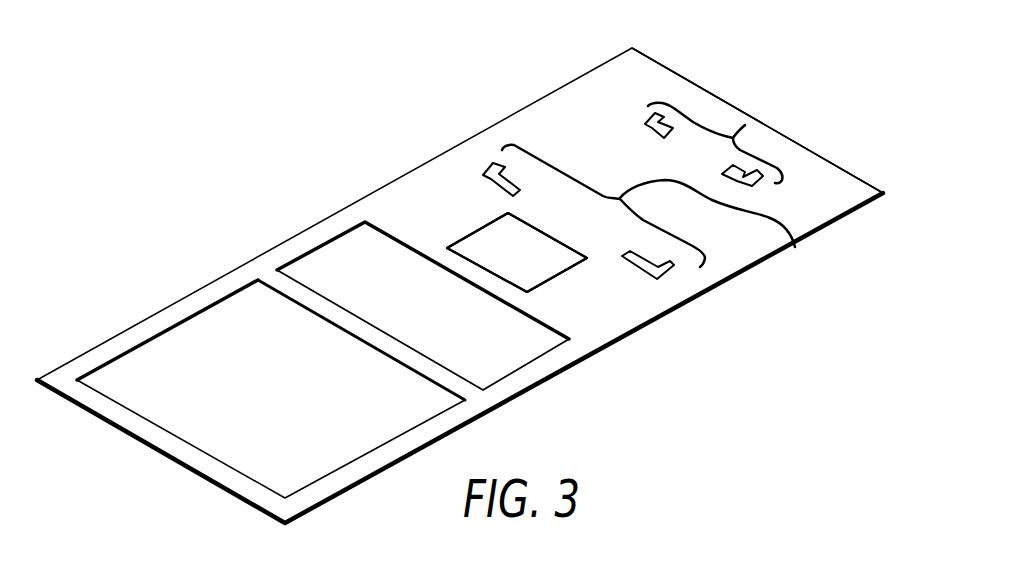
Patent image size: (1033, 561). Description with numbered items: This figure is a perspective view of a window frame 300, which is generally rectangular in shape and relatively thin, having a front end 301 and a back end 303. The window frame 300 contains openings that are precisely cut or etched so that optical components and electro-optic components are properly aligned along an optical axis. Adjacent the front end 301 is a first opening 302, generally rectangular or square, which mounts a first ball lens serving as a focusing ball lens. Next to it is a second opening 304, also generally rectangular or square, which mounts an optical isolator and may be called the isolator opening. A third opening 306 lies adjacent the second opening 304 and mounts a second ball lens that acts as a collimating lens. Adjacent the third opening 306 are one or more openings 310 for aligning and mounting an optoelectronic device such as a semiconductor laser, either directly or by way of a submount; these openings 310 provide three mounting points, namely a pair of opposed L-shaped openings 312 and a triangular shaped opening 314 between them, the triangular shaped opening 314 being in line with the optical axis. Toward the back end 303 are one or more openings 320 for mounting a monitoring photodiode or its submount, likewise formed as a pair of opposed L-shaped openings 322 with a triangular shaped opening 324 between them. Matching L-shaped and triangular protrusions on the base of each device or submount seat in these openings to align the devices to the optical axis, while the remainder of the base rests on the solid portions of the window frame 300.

The window frame 300 is at (312, 103).
The front end 301 is at (160, 453).
The first opening 302 is at (248, 360).
The back end 303 is at (677, 72).
The second opening 304 is at (378, 288).
The third opening 306 is at (528, 264).
The openings 310 is at (795, 247).
The L-shaped openings 312 is at (466, 174).
The triangular shaped opening 314 is at (566, 224).
The openings 320 is at (745, 125).
The L-shaped openings 322 is at (632, 119).
The triangular shaped opening 324 is at (681, 157).